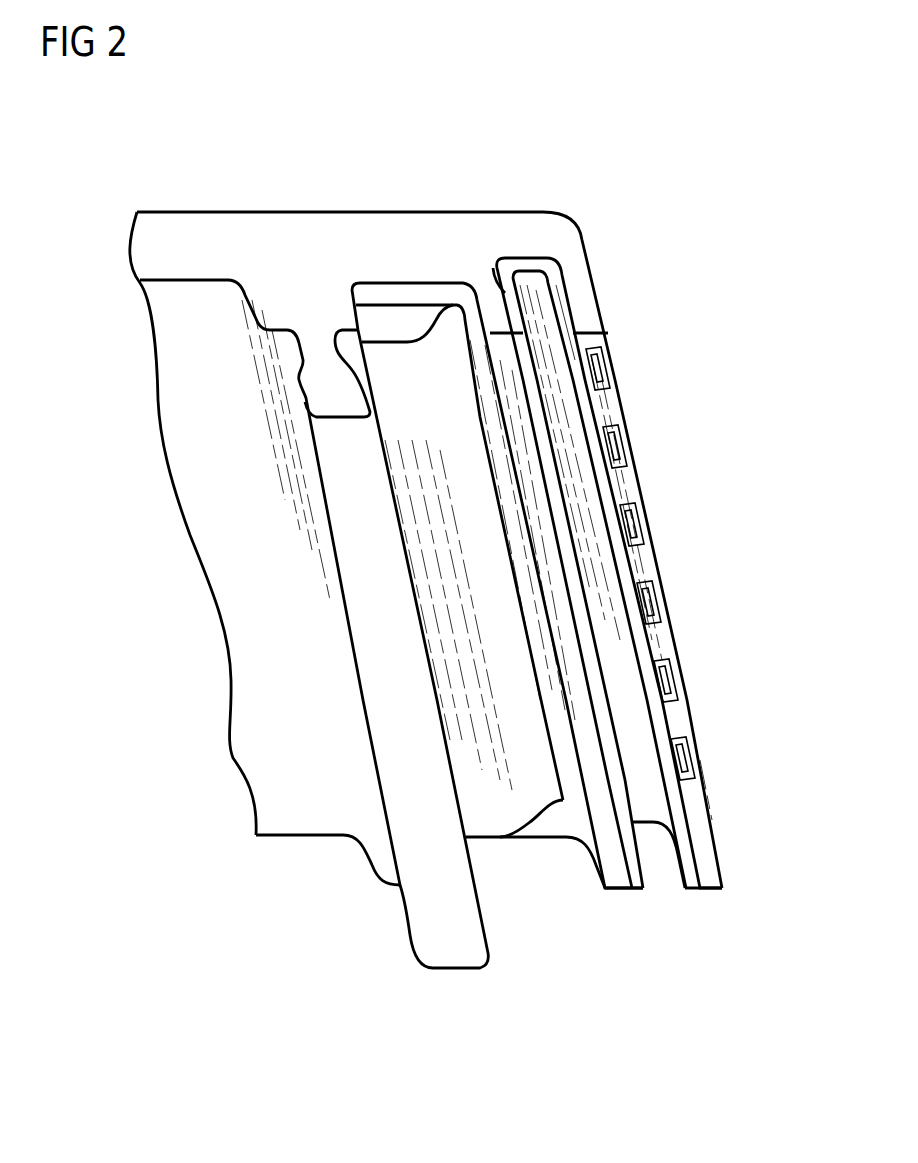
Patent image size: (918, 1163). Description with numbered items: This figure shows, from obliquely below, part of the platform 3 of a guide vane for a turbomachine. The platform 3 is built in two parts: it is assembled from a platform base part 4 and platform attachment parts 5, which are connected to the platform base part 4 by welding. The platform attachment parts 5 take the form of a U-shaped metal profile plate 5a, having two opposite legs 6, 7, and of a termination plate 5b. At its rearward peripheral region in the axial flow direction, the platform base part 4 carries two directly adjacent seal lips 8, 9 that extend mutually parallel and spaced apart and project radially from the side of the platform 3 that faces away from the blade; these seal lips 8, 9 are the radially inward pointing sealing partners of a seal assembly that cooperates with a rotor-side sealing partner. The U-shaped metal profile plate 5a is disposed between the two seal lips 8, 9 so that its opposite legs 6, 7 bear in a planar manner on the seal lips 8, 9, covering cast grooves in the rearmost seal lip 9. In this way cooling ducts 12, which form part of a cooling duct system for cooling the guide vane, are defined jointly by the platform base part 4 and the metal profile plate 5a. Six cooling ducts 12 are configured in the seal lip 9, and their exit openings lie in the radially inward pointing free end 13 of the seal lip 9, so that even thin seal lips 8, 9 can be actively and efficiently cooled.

The platform 3 is at (140, 245).
The platform base part 4 is at (358, 232).
The platform attachment parts 5 is at (578, 543).
The U-shaped metal profile plate 5a is at (527, 268).
The termination plate 5b is at (493, 817).
The leg 6 is at (560, 287).
The leg 7 is at (505, 290).
The seal lip 8 is at (585, 301).
The seal lip 9 is at (483, 283).
The cooling ducts 12 is at (606, 385).
The free end 13 is at (706, 870).